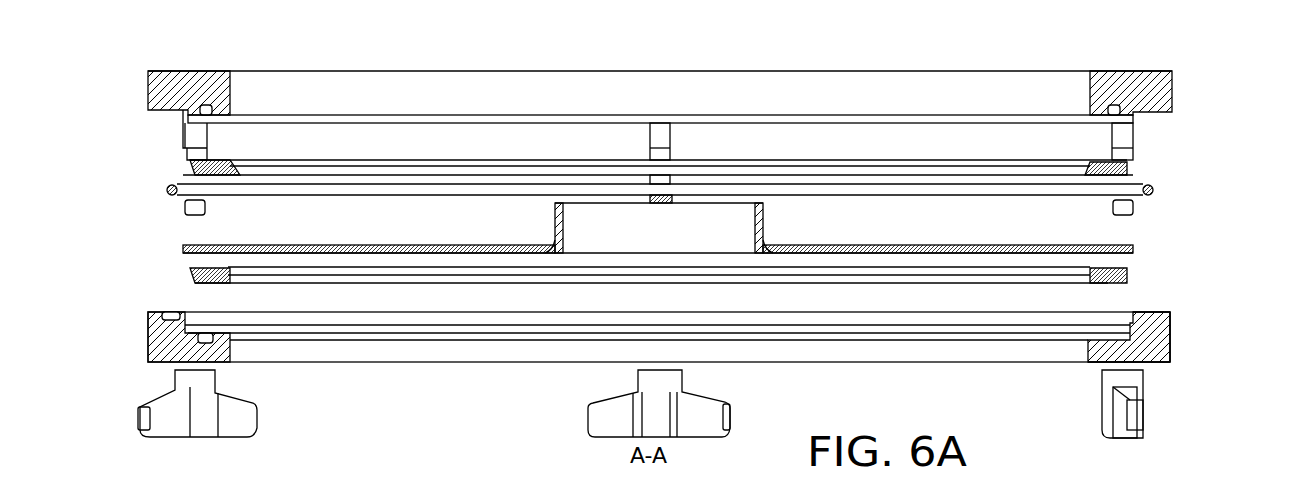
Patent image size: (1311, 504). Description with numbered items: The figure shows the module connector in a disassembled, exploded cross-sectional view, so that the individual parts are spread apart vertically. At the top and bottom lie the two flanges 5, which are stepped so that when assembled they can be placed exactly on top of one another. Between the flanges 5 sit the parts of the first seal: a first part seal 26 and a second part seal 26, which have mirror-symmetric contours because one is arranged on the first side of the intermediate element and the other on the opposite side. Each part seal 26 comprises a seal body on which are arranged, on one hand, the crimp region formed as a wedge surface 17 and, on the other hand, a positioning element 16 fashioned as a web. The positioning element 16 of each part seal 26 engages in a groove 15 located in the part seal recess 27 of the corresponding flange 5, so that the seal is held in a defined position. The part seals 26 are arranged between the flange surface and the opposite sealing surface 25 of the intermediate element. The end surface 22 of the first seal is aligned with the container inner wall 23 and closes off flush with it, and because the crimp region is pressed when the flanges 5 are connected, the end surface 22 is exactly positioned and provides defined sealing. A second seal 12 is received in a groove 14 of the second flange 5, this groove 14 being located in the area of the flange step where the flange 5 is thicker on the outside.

The flange 5 is at (1160, 83).
The second seal 12 is at (168, 193).
The groove 14 is at (1160, 363).
The groove 15 is at (1113, 340).
The positioning element 16 is at (1157, 313).
The wedge surface 17 is at (1093, 268).
The end surface 22 is at (237, 170).
The container inner wall 23 is at (231, 87).
The sealing surface 25 is at (188, 257).
The part seal 26 is at (1133, 165).
The part seal recess 27 is at (213, 124).